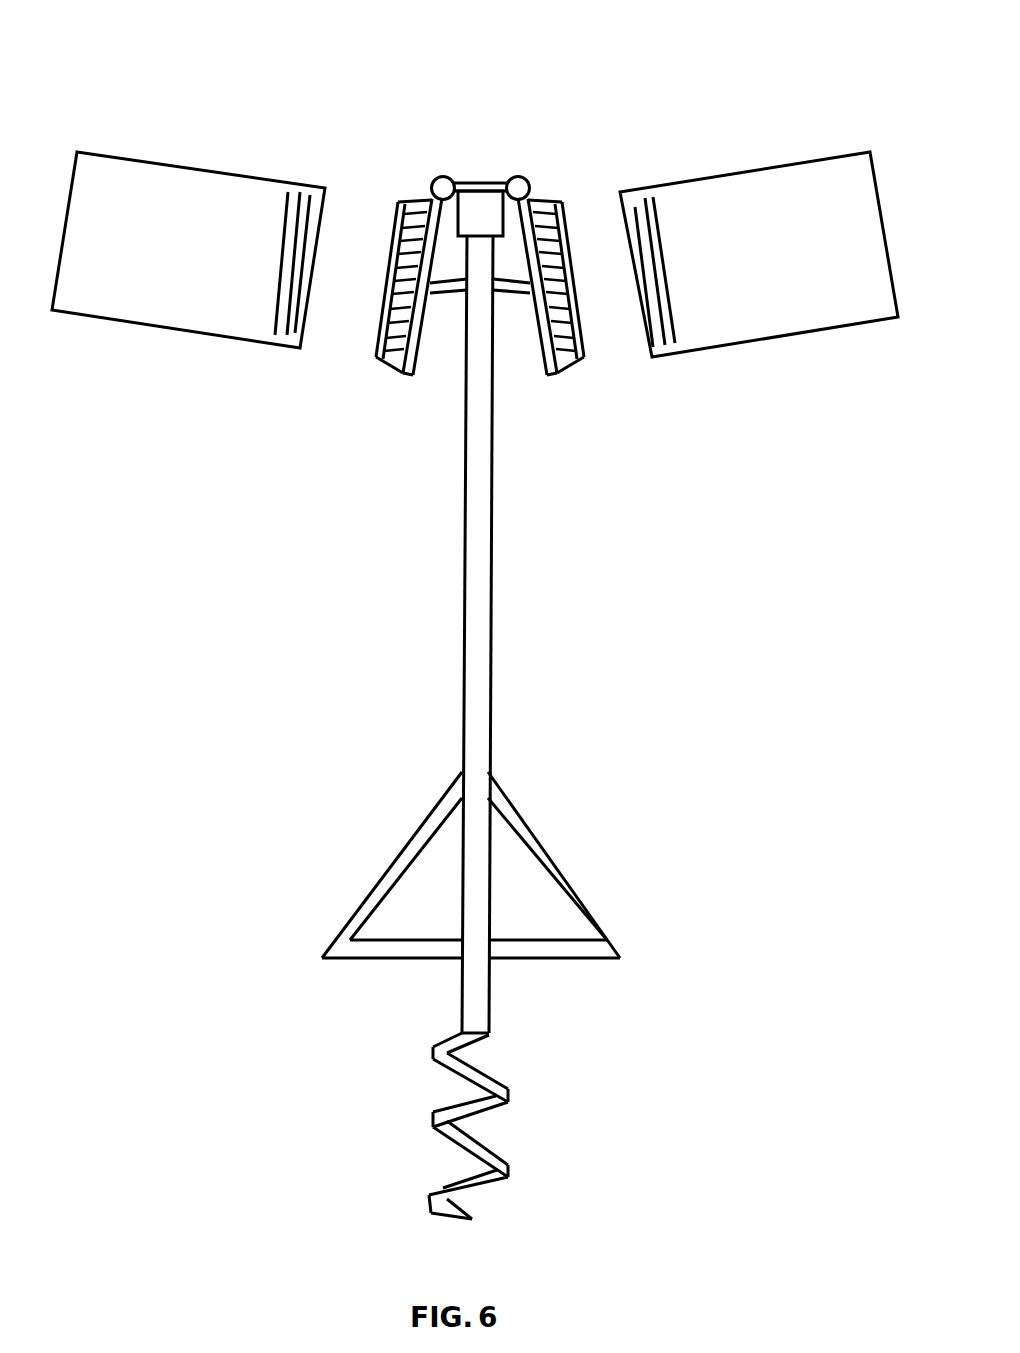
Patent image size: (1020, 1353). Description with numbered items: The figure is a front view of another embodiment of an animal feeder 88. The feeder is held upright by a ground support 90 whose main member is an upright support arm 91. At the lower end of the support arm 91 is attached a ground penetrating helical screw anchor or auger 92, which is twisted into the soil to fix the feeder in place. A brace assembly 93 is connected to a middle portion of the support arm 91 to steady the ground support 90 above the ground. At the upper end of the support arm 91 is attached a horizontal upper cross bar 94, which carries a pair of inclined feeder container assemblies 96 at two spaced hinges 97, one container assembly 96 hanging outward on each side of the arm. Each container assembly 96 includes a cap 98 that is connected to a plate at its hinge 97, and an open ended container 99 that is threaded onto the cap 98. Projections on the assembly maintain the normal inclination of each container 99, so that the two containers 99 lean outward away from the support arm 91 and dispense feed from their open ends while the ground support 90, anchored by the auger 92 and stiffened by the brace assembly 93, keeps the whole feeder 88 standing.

The animal feeder 88 is at (265, 533).
The ground support 90 is at (505, 626).
The support arm 91 is at (470, 595).
The helical screw anchor or auger 92 is at (510, 1097).
The brace assembly 93 is at (527, 822).
The horizontal upper cross bar 94 is at (470, 224).
The inclined feeder container assembly 96 is at (200, 118).
The hinge 97 is at (517, 177).
The cap 98 is at (388, 367).
The open ended container 99 is at (133, 310).